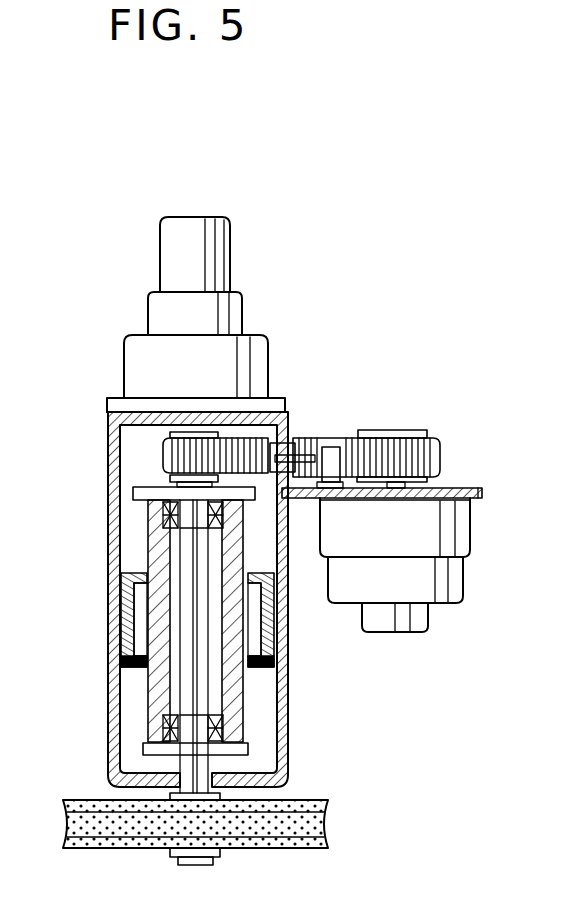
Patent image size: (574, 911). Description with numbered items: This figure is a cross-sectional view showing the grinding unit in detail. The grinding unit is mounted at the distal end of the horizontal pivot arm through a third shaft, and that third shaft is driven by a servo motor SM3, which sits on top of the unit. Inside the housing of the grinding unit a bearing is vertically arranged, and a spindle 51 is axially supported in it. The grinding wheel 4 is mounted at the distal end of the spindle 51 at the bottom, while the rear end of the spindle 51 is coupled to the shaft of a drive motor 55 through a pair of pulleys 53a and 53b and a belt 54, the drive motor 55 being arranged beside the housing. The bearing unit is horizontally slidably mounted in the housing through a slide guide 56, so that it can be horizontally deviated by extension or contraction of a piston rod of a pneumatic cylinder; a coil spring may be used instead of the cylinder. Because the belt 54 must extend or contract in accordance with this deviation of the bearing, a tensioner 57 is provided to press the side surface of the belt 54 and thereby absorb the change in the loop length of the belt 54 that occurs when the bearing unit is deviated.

The servo motor SM3 is at (232, 230).
The belt 54 is at (180, 458).
The pulley 53a is at (207, 431).
The pulley 53b is at (413, 432).
The tensioner 57 is at (287, 443).
The drive motor 55 is at (452, 545).
The spindle 51 is at (192, 683).
The slide guide 56 is at (110, 658).
The grinding wheel 4 is at (245, 840).